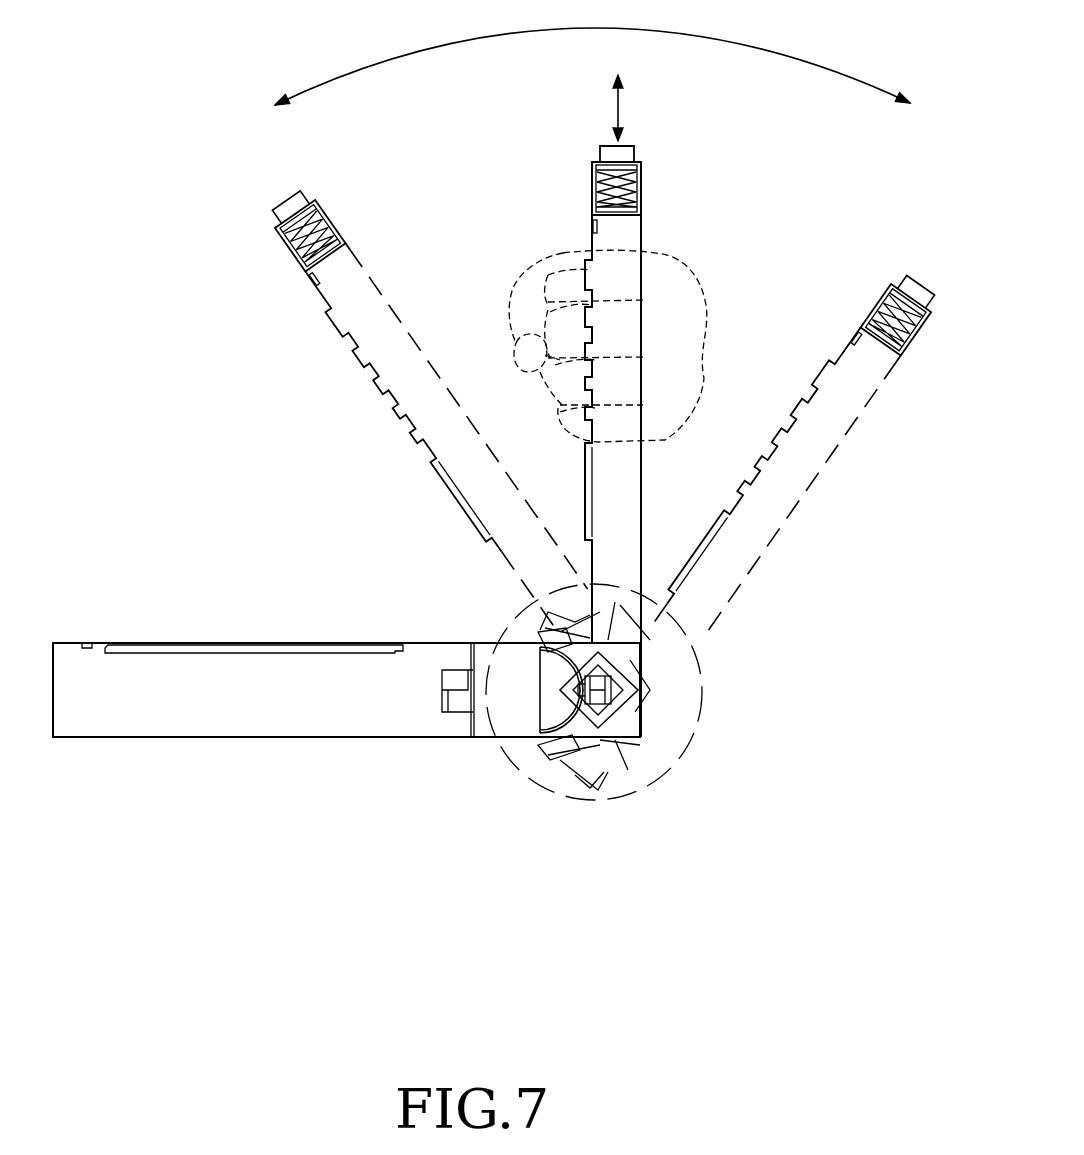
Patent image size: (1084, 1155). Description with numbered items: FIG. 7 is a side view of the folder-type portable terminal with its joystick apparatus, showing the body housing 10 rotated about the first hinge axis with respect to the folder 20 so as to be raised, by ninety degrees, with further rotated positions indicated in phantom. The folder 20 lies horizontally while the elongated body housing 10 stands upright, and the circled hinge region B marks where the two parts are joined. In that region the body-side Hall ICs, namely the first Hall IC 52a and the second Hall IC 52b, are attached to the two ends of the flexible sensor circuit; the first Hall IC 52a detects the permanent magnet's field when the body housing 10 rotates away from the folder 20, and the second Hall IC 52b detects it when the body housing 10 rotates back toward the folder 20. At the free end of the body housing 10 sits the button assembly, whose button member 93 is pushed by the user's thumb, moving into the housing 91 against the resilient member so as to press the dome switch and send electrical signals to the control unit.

The body housing 10 is at (641, 240).
The folder 20 is at (190, 727).
The housing 91 is at (641, 187).
The button member 93 is at (619, 143).
The first Hall IC 52a is at (600, 645).
The second Hall IC 52b is at (600, 720).
The hinge detail region B is at (623, 798).